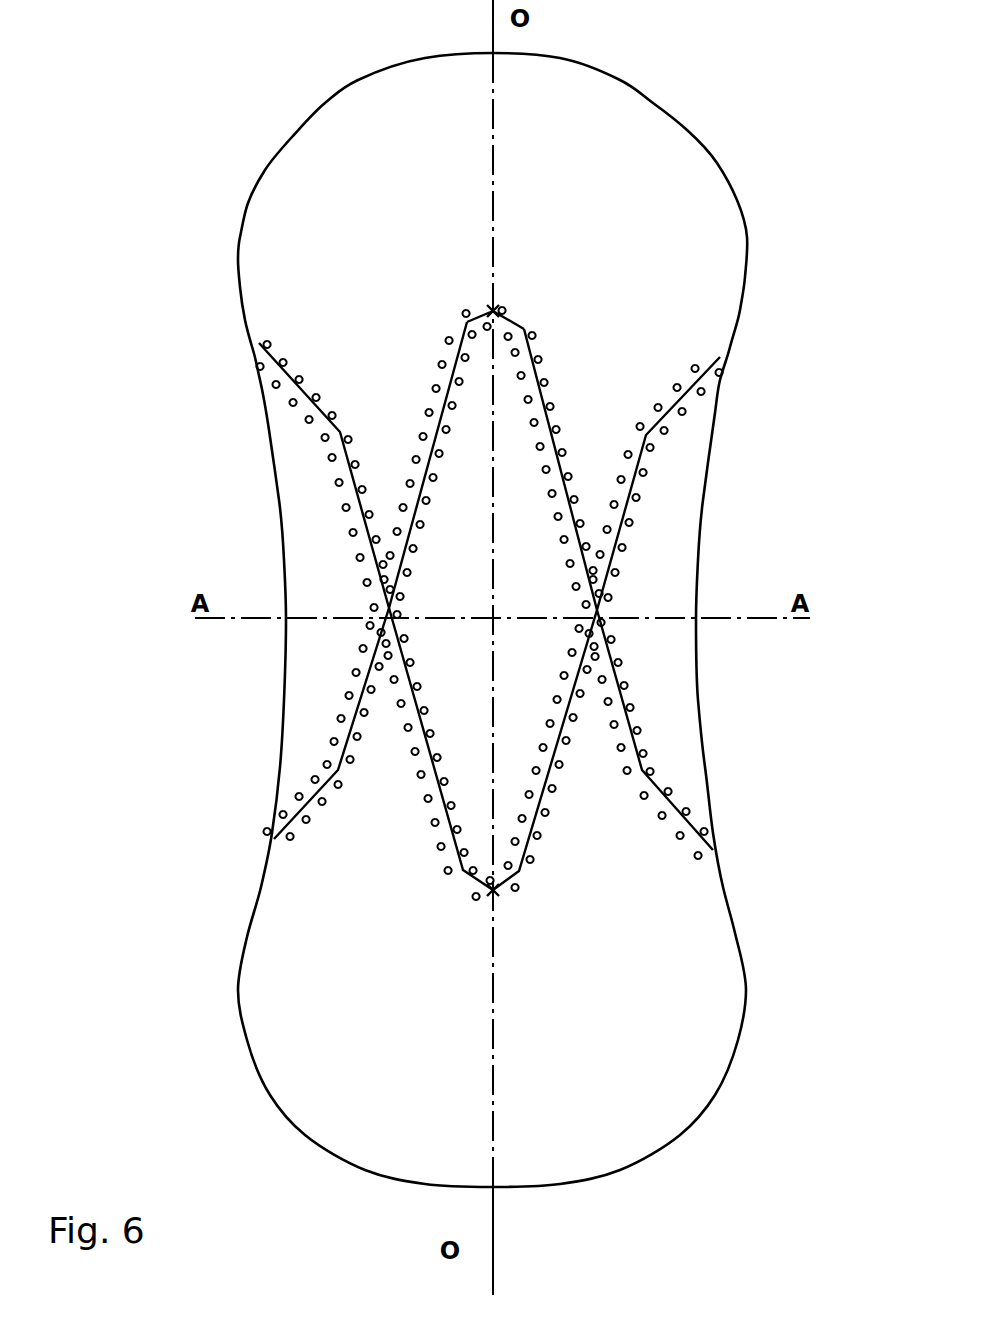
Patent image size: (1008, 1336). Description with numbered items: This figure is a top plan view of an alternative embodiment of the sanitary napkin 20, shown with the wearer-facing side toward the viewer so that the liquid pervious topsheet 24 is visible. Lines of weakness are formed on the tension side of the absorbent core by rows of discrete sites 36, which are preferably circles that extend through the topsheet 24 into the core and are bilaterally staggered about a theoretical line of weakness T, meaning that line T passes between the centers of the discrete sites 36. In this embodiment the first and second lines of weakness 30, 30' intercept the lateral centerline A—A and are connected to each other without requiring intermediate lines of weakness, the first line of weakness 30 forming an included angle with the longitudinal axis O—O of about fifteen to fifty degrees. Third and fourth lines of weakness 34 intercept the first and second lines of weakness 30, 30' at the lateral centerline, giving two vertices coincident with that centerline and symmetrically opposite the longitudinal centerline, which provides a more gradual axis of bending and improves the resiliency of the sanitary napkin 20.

The sanitary napkin 20 is at (185, 950).
The liquid pervious topsheet 24 is at (343, 1089).
The first line of weakness 30 is at (449, 363).
The second line of weakness 30' is at (487, 822).
The third and fourth lines of weakness 34 is at (305, 476).
The discrete sites 36 is at (313, 415).
The theoretical line of weakness T is at (340, 432).